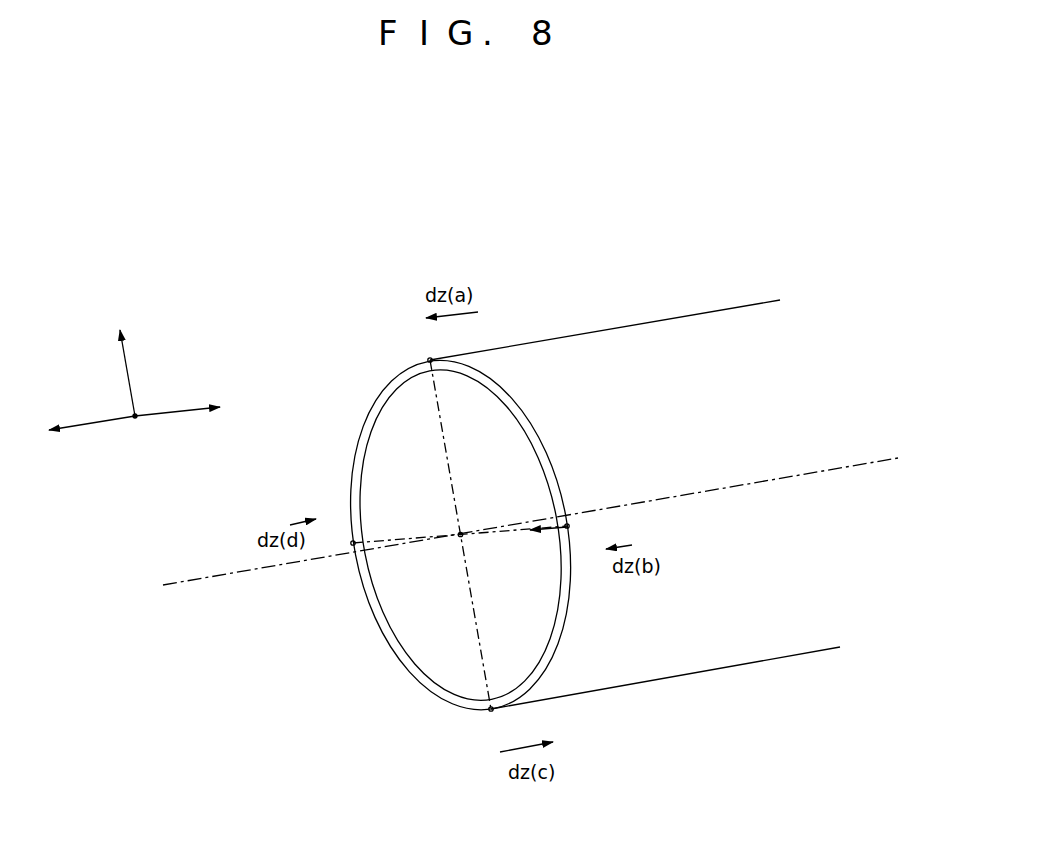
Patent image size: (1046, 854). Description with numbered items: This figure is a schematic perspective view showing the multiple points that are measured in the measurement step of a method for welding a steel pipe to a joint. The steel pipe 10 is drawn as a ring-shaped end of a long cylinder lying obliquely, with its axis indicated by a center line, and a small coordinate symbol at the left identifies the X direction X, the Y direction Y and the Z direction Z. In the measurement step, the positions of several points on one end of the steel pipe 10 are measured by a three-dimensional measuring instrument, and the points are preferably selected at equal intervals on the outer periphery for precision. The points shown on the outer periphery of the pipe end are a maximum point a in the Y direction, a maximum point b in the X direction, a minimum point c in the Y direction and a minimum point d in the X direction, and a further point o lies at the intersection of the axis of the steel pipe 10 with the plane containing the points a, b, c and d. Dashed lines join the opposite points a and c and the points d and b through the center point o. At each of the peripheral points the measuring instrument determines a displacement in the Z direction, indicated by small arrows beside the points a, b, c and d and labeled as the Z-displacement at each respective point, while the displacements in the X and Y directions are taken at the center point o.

The steel pipe 10 is at (667, 665).
The maximum point in the Y direction a is at (429, 349).
The maximum point in the X direction b is at (574, 526).
The minimum point in the Y direction c is at (488, 723).
The minimum point in the X direction d is at (345, 534).
The point at the intersection of the axis of the steel pipe and the planes including o is at (452, 523).
The X direction X is at (189, 409).
The Y direction Y is at (123, 359).
The Z direction Z is at (80, 430).